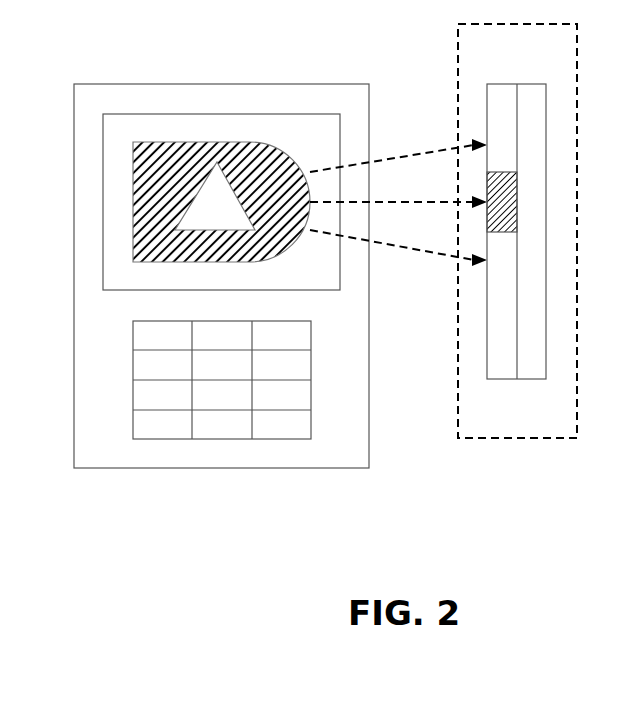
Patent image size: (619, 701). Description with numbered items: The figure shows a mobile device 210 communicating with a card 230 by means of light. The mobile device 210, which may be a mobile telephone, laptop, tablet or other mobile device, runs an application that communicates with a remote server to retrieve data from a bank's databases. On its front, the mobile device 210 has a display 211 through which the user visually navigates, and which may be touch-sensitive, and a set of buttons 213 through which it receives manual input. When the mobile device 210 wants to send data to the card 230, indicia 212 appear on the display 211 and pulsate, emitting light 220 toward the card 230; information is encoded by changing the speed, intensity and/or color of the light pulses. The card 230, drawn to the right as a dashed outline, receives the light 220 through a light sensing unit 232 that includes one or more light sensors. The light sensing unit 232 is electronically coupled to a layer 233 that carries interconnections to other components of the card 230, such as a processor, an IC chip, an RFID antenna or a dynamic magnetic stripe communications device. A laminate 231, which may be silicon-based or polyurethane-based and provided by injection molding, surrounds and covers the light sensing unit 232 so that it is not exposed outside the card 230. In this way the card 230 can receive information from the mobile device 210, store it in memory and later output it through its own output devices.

The mobile device 210 is at (74, 108).
The display 211 is at (103, 168).
The indicia 212 is at (133, 242).
The buttons 213 is at (132, 331).
The light 220 is at (430, 151).
The card 230 is at (458, 34).
The laminate 231 is at (487, 333).
The light sensing unit 232 is at (487, 181).
The layer 233 is at (517, 374).